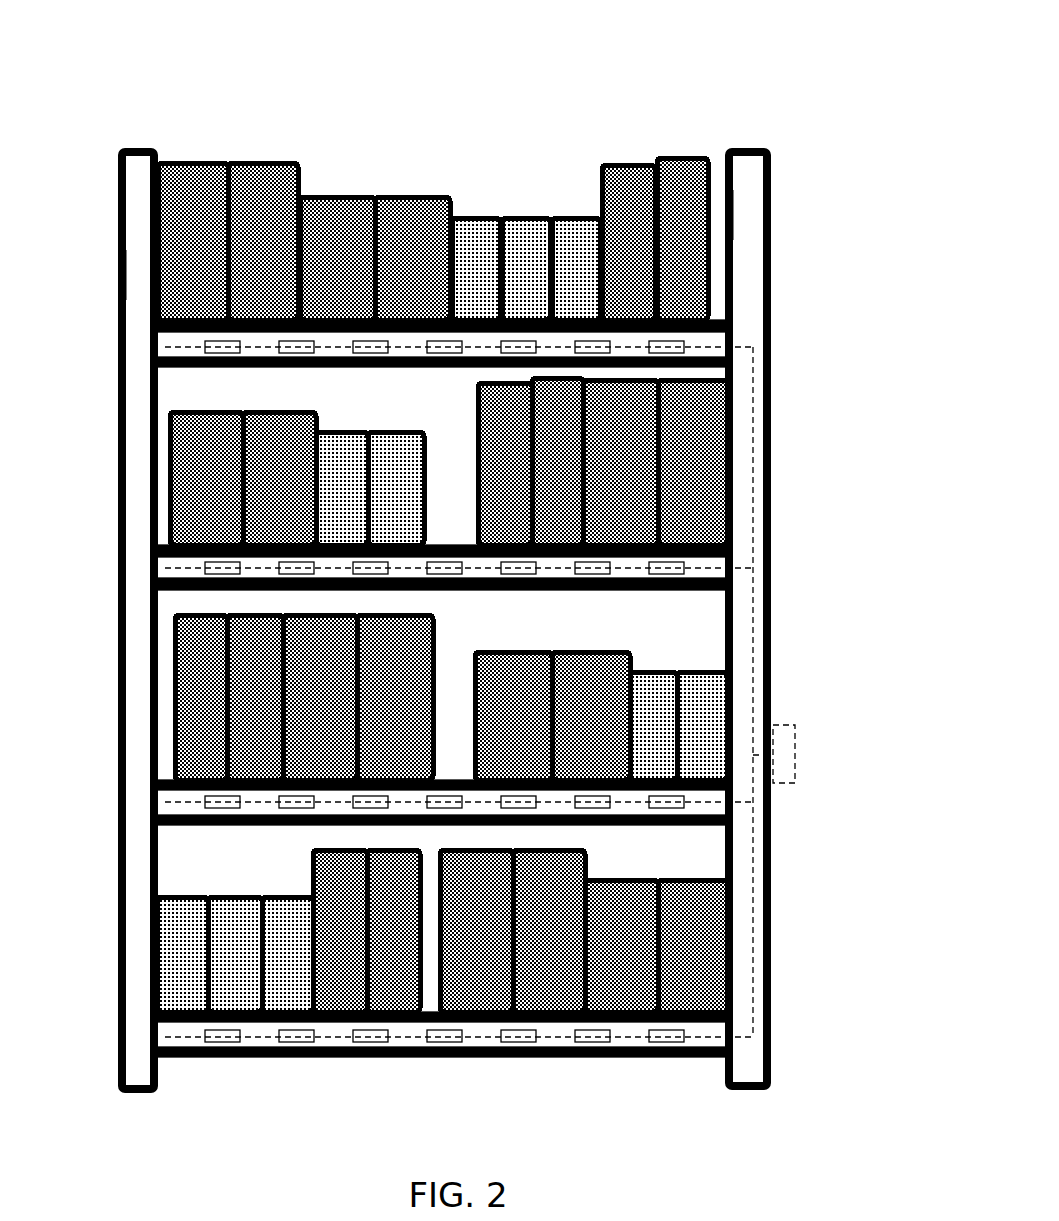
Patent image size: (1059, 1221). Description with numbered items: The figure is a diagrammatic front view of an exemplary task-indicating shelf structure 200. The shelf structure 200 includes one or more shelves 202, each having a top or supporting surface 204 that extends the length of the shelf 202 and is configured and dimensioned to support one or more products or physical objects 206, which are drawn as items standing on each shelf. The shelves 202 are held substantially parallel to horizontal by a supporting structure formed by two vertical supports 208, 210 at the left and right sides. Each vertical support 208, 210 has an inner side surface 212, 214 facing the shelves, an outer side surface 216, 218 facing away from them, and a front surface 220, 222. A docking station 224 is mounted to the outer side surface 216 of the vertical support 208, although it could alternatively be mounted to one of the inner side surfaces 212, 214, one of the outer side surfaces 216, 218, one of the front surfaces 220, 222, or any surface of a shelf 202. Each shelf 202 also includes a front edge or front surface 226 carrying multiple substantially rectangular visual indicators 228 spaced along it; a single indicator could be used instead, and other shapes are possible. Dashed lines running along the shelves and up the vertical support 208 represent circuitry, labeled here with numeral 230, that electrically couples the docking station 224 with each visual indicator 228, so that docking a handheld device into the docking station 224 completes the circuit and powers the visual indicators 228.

The task-indicating shelf structure 200 is at (598, 56).
The shelf 202 is at (255, 362).
The supporting surface 204 is at (455, 543).
The physical object 206 is at (258, 162).
The vertical support 208 is at (750, 148).
The vertical support 210 is at (135, 148).
The inner side surface 212 is at (725, 622).
The inner side surface 214 is at (160, 860).
The outer side surface 216 is at (775, 250).
The outer side surface 218 is at (123, 230).
The front surface 220 is at (752, 205).
The front surface 222 is at (138, 277).
The docking station 224 is at (795, 755).
The front surface 226 is at (178, 800).
The visual indicator 228 is at (196, 350).
The wiring / communication line 230 is at (752, 385).